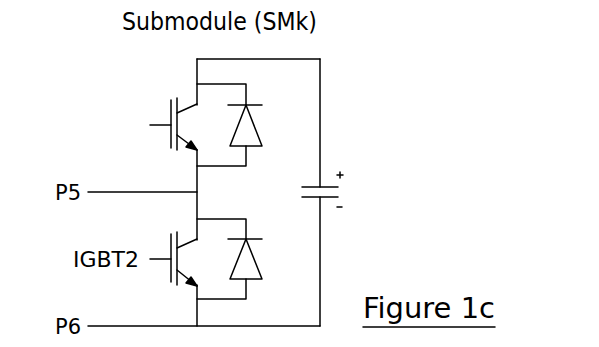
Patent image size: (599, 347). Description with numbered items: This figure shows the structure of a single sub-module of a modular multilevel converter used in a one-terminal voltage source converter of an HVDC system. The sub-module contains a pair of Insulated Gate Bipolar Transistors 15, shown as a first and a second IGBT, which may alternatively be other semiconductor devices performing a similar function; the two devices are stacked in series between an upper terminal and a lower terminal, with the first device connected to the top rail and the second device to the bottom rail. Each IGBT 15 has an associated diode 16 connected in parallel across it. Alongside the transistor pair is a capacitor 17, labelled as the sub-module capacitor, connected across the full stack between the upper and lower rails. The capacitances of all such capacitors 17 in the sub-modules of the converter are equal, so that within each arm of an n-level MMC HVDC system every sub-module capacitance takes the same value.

The Insulated Gate Bipolar Transistor 15 is at (158, 105).
The diode 16 is at (265, 156).
The capacitor 17 is at (435, 188).